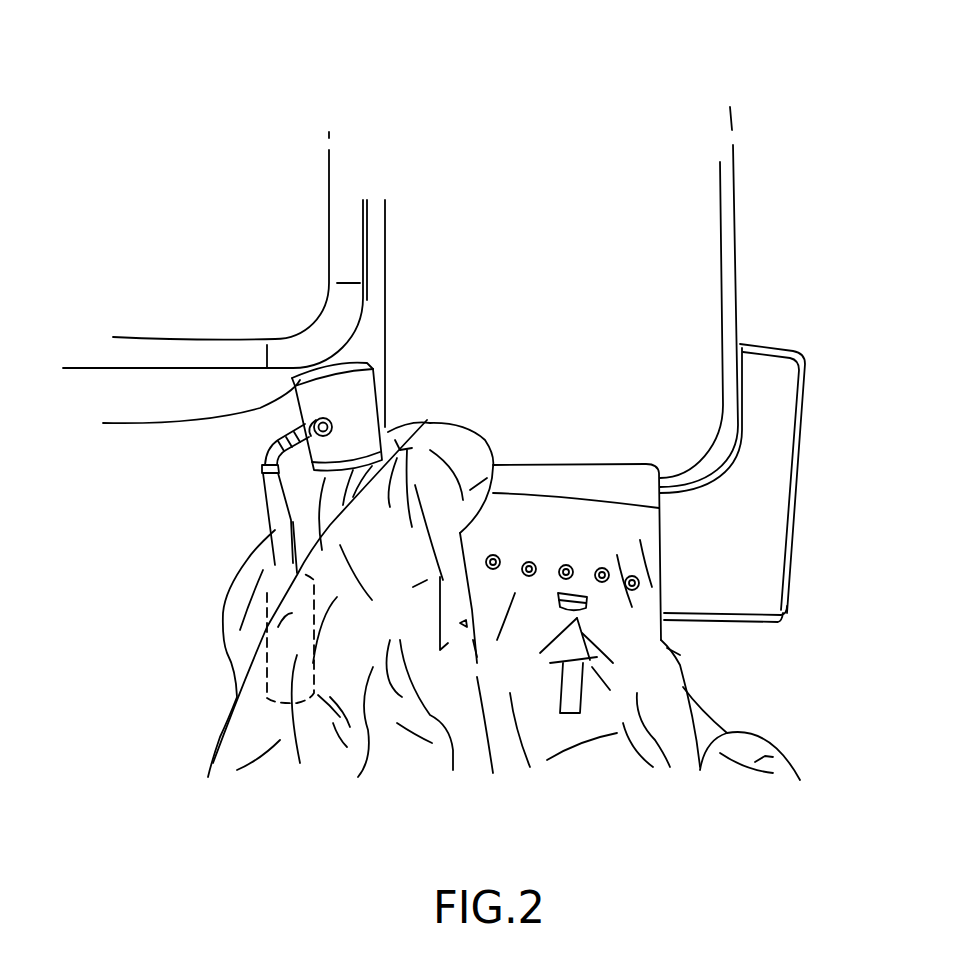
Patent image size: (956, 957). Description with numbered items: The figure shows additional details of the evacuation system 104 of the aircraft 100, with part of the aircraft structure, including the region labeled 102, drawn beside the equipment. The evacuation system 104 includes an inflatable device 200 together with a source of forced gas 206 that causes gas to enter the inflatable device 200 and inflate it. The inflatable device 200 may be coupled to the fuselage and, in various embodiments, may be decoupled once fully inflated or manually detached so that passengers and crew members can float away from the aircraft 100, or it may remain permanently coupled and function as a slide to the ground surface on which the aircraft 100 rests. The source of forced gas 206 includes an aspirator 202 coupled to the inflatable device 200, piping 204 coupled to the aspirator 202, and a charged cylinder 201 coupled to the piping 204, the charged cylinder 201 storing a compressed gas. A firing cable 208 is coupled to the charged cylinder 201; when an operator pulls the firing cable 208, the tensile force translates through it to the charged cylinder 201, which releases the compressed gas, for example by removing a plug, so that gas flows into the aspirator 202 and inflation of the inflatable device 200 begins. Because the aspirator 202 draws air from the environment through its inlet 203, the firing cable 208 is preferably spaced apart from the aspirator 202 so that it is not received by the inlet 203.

The aircraft 100 is at (250, 80).
The window frame 102 is at (715, 262).
The evacuation system 104 is at (156, 557).
The inflatable device 200 is at (473, 758).
The charged cylinder 201 is at (265, 638).
The aspirator 202 is at (360, 413).
The inlet 203 is at (370, 363).
The piping 204 is at (278, 498).
The source of forced gas 206 is at (323, 347).
The firing cable 208 is at (463, 427).